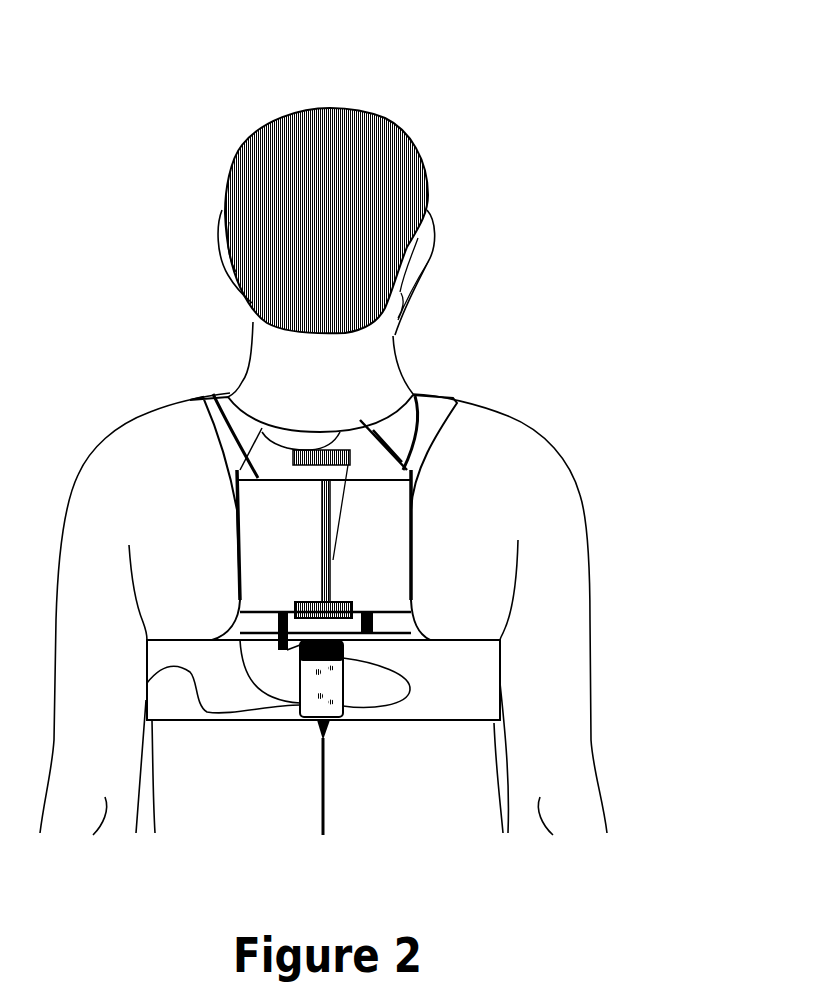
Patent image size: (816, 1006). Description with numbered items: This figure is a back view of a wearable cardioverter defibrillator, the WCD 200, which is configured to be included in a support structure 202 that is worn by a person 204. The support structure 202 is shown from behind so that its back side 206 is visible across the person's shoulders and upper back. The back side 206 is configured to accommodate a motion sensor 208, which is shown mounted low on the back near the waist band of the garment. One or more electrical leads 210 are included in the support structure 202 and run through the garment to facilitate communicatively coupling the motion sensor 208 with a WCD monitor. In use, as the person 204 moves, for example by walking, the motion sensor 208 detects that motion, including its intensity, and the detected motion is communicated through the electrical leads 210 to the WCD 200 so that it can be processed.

The WCD 200 is at (436, 29).
The support structure 202 is at (385, 565).
The person 204 is at (427, 180).
The back side 206 is at (274, 534).
The motion sensor 208 is at (343, 657).
The electrical leads 210 is at (333, 560).